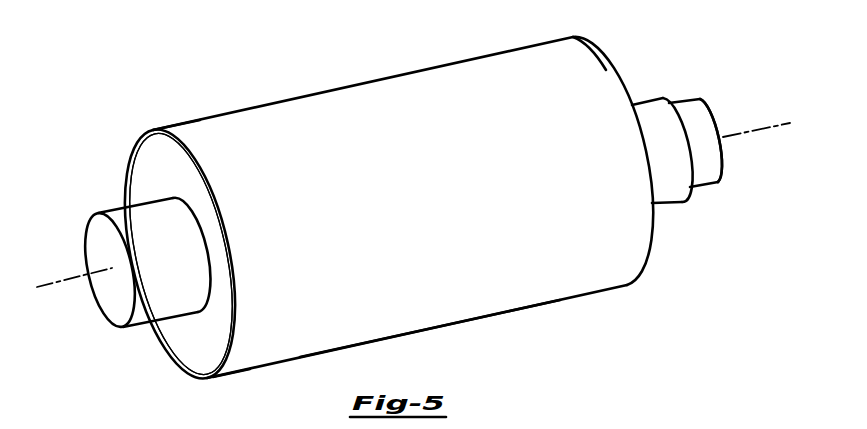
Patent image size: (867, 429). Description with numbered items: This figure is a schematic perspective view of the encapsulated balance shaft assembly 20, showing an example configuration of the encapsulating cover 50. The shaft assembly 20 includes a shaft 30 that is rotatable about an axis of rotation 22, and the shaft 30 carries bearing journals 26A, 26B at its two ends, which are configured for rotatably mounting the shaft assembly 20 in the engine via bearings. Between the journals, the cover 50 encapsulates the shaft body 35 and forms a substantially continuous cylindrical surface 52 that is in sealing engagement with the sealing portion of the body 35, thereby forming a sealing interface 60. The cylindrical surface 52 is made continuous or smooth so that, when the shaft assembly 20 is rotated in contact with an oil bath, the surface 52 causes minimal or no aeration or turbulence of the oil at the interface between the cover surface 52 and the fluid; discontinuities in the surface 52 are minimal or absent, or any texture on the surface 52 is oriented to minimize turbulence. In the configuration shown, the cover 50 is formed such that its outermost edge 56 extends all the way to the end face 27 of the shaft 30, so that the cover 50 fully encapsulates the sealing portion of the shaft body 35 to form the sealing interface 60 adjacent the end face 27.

The shaft assembly 20 is at (746, 100).
The axis of rotation 22 is at (778, 128).
The bearing journal 26A is at (113, 212).
The bearing journal 26B is at (644, 99).
The end face 27 is at (199, 340).
The shaft 30 is at (723, 163).
The shaft body 35 is at (134, 178).
The encapsulating cover 50 is at (412, 72).
The substantially continuous cylindrical surface 52 is at (490, 297).
The outermost edge 56 is at (232, 360).
The sealing interface 60 is at (153, 130).